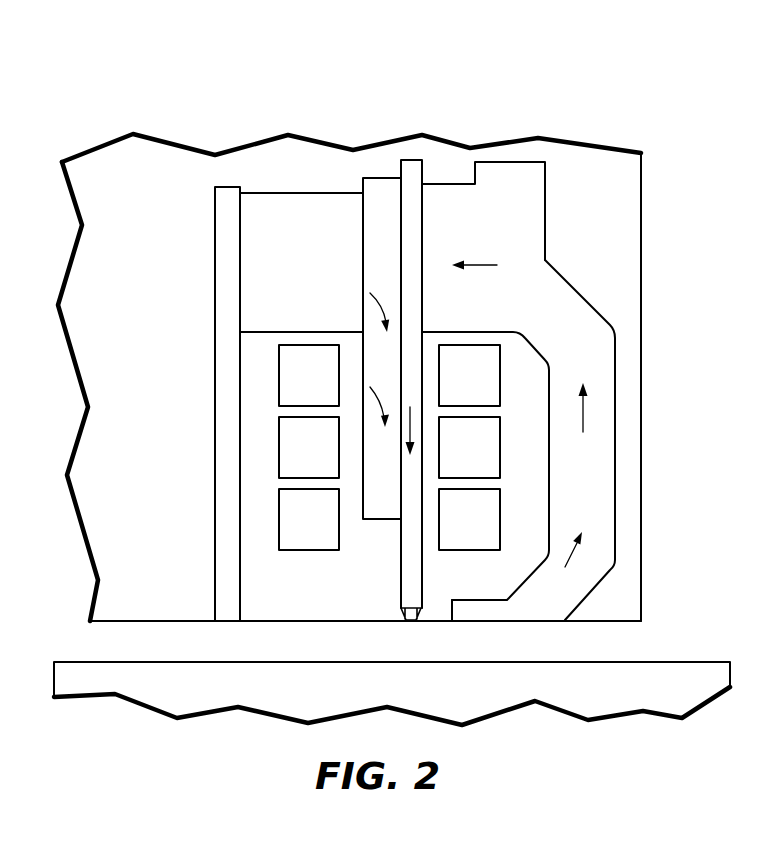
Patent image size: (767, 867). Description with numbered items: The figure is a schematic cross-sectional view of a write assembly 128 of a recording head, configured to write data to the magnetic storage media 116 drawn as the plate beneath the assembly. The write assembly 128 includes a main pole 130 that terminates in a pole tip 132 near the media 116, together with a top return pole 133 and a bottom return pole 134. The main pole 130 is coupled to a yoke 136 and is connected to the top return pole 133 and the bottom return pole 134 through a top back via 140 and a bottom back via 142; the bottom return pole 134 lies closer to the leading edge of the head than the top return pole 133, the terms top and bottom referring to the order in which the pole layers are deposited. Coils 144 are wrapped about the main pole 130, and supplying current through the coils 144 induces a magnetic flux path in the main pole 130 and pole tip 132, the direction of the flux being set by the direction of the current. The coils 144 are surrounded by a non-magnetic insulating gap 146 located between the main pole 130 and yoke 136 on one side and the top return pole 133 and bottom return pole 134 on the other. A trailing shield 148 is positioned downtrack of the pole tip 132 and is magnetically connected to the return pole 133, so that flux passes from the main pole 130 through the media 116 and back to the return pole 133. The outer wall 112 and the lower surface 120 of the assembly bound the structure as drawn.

The housing 112 is at (641, 410).
The media 116 is at (690, 662).
The bottom surface of housing 120 is at (610, 622).
The write assembly 128 is at (600, 125).
The main pole 130 is at (408, 542).
The pole tip 132 is at (410, 622).
The top return pole 133 is at (585, 323).
The bottom return pole 134 is at (222, 352).
The yoke 136 is at (378, 222).
The top back via 140 is at (495, 237).
The bottom back via 142 is at (304, 251).
The coils 144 is at (293, 388).
The non-magnetic insulating gap 146 is at (332, 615).
The trailing shield 148 is at (465, 610).